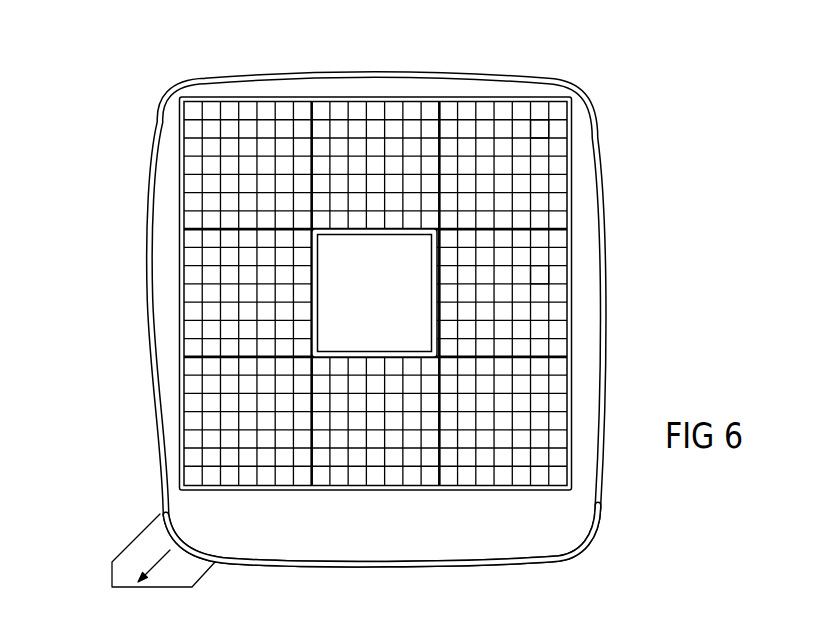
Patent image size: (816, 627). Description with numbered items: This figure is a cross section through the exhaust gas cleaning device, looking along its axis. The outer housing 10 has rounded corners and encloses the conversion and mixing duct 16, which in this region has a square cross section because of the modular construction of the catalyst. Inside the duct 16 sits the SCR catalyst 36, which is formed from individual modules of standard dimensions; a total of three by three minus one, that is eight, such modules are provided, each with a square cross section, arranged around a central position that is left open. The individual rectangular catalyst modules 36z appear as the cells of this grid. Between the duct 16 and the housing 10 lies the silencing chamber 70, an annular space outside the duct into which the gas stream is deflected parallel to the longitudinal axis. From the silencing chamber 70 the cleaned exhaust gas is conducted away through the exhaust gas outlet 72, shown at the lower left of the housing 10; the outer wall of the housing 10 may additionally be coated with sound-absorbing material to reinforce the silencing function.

The housing 10 is at (598, 140).
The conversion and mixing duct 16 is at (390, 294).
The SCR catalyst 36 is at (502, 110).
The rectangular catalyst module 36z is at (537, 123).
The silencing chamber 70 is at (520, 522).
The exhaust gas outlet 72 is at (149, 540).